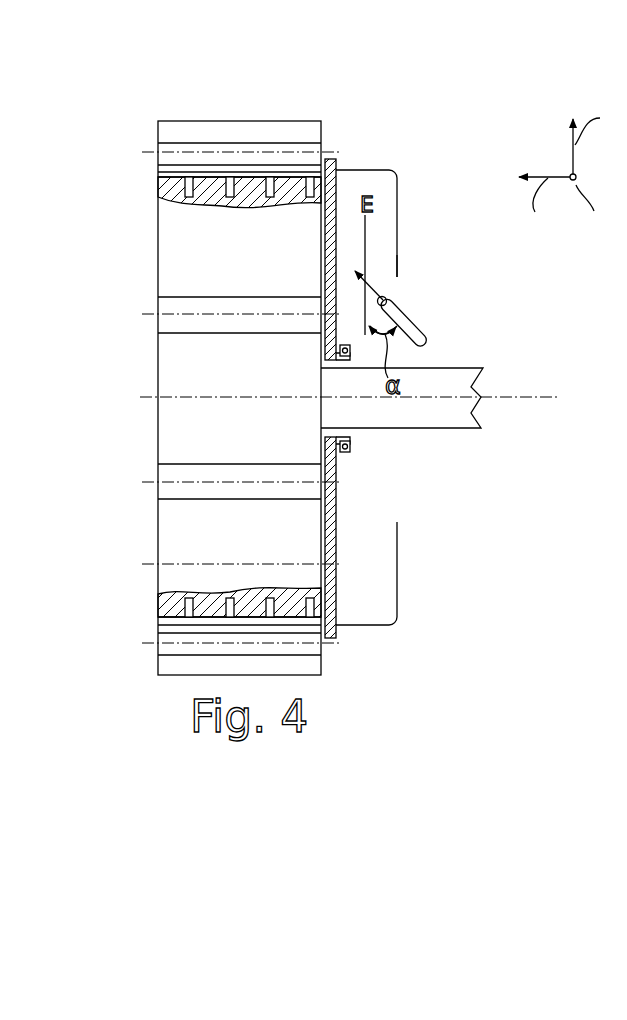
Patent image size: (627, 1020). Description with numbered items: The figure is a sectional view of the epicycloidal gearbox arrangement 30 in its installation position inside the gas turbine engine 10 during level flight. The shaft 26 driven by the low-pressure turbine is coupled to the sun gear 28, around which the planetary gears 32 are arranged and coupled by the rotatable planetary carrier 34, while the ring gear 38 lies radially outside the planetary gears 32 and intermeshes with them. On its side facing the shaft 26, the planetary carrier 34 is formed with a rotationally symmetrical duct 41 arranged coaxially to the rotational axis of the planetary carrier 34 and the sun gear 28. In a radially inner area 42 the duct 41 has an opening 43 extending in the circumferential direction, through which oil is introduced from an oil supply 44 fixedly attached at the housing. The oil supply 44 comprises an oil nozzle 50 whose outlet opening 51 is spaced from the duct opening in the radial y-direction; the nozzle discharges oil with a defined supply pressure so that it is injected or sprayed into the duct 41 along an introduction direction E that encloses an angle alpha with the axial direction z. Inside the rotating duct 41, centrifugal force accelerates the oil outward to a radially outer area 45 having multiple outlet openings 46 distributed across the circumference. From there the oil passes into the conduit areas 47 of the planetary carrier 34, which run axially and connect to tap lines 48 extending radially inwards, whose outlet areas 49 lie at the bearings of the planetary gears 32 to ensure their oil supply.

The gas turbine engine 10 is at (502, 151).
The shaft 26 is at (457, 405).
The sun gear 28 is at (170, 365).
The epicycloidal gearbox arrangement 30 is at (121, 133).
The planetary gears 32 is at (170, 303).
The planetary carrier 34 is at (354, 213).
The ring gear 38 is at (310, 660).
The duct 41 is at (402, 213).
The radially inner area 42 is at (400, 282).
The opening 43 is at (380, 526).
The oil supply 44 is at (455, 284).
The radially outer area 45 is at (392, 160).
The outlet openings 46 is at (338, 167).
The conduit areas 47 is at (193, 159).
The tap lines 48 is at (183, 190).
The outlet areas 49 is at (188, 208).
The oil nozzle 50 is at (410, 320).
The outlet opening 51 is at (386, 297).